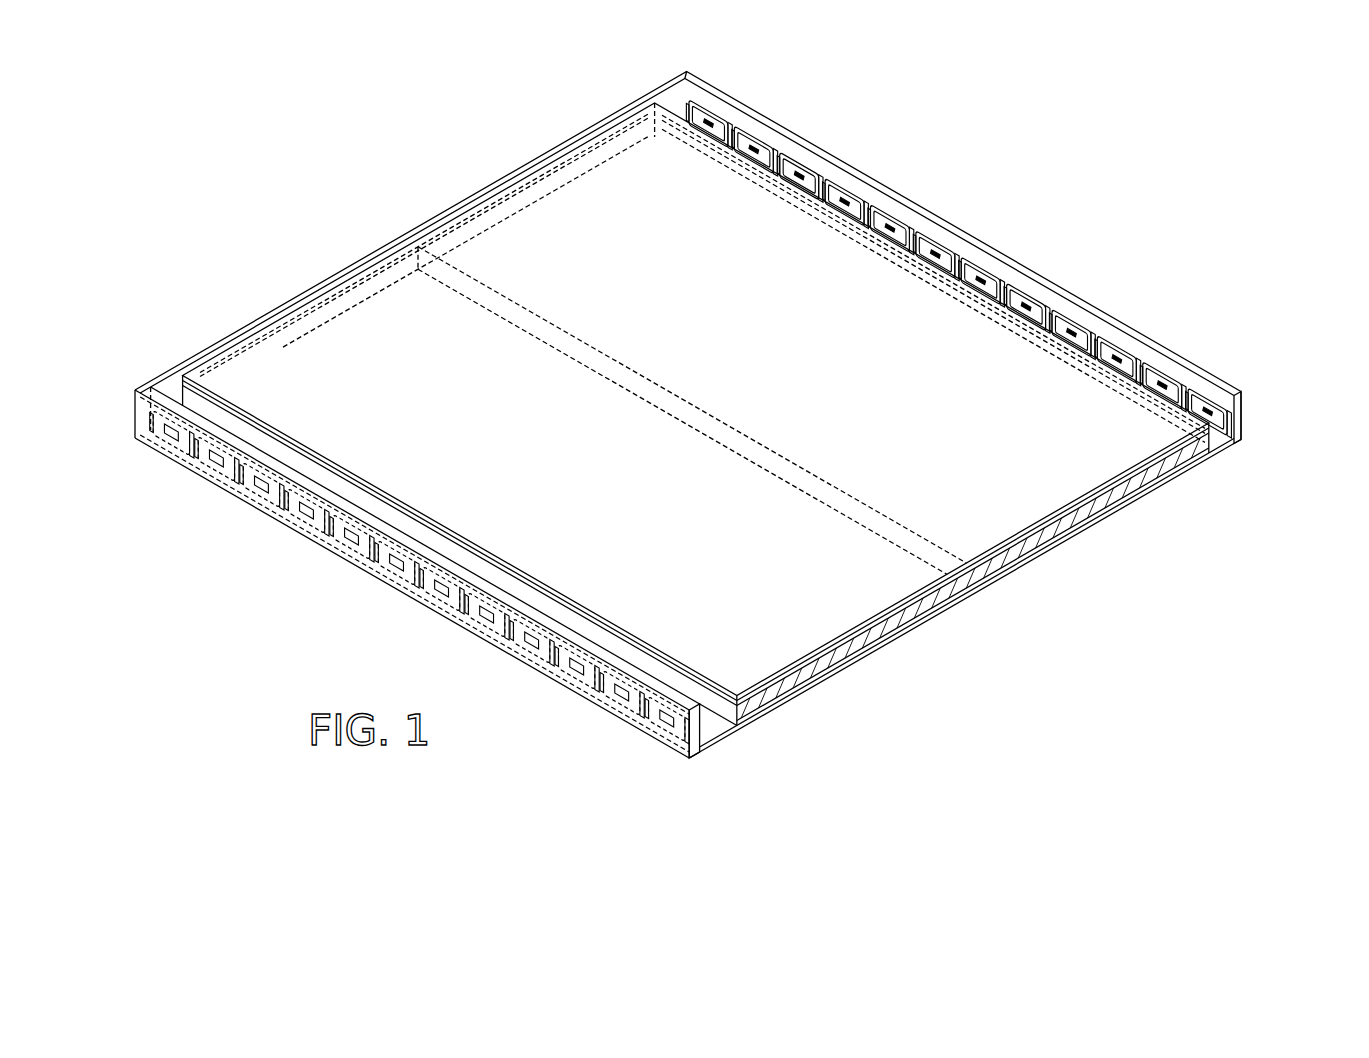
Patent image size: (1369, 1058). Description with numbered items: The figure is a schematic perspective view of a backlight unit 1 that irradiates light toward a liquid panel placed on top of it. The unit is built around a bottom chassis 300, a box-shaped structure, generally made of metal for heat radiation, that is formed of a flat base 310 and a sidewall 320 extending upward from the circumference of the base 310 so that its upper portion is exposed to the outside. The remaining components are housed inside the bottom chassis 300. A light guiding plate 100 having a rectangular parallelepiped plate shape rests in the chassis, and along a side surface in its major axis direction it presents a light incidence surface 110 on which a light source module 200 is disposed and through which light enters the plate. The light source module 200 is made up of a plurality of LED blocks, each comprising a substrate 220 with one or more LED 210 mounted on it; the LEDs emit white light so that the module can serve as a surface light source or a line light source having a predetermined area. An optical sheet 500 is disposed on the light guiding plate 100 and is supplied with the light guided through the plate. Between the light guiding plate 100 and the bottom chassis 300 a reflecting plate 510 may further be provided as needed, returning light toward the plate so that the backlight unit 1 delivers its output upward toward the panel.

The backlight unit 1 is at (381, 63).
The light guiding plate 100 is at (847, 672).
The light incidence surface 110 is at (1224, 450).
The light source module 200 is at (1200, 384).
The LED 210 is at (1160, 374).
The substrate 220 is at (1237, 441).
The bottom chassis 300 is at (1197, 478).
The base 310 is at (1046, 548).
The sidewall 320 is at (1244, 403).
The optical sheet 500 is at (917, 607).
The reflecting plate 510 is at (1120, 500).